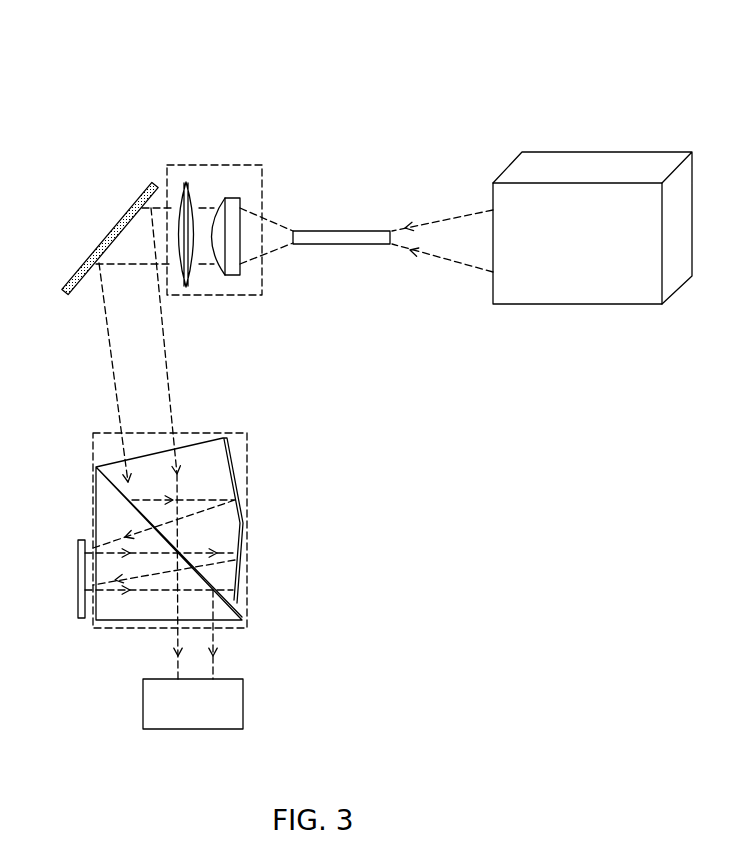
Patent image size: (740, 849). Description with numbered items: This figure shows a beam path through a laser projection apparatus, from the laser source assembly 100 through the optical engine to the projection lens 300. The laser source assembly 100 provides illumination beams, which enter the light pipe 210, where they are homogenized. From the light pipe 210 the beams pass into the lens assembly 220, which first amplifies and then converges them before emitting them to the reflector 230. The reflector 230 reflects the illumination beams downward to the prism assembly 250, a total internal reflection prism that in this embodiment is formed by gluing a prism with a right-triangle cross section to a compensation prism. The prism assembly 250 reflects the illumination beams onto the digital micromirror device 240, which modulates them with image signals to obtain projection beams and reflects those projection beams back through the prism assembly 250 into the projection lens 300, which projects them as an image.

The laser source assembly 100 is at (630, 173).
The light pipe 210 is at (360, 230).
The lens assembly 220 is at (232, 164).
The reflector 230 is at (106, 240).
The digital micromirror device 240 is at (78, 587).
The prism assembly 250 is at (247, 487).
The projection lens 300 is at (142, 718).